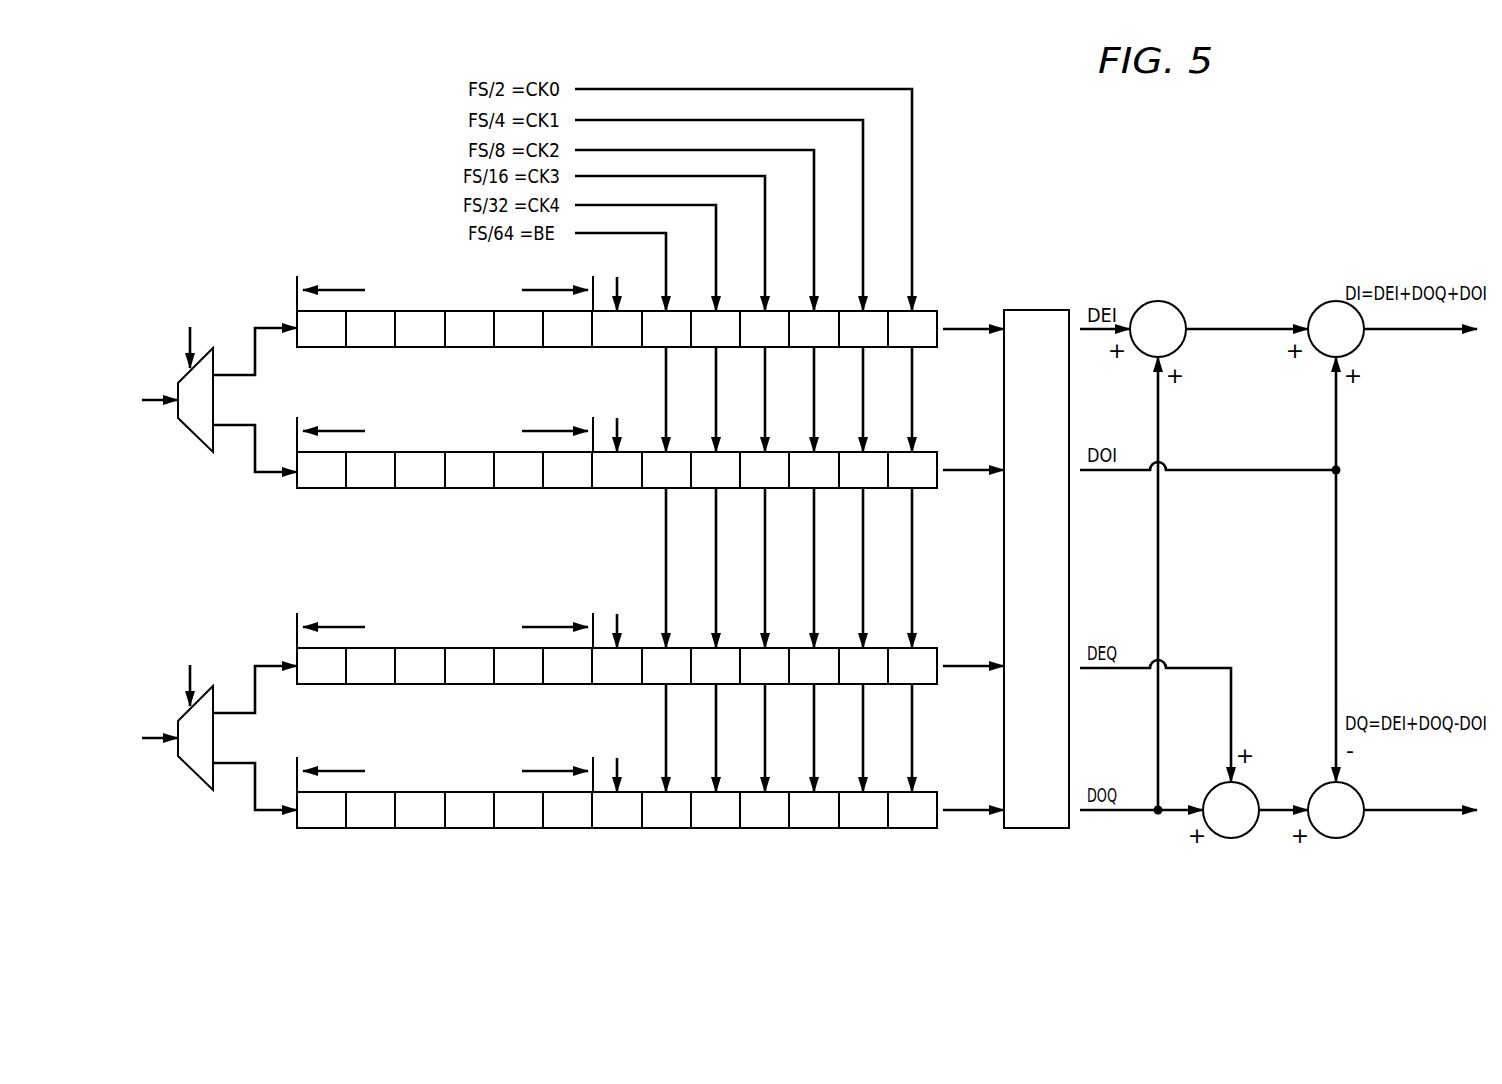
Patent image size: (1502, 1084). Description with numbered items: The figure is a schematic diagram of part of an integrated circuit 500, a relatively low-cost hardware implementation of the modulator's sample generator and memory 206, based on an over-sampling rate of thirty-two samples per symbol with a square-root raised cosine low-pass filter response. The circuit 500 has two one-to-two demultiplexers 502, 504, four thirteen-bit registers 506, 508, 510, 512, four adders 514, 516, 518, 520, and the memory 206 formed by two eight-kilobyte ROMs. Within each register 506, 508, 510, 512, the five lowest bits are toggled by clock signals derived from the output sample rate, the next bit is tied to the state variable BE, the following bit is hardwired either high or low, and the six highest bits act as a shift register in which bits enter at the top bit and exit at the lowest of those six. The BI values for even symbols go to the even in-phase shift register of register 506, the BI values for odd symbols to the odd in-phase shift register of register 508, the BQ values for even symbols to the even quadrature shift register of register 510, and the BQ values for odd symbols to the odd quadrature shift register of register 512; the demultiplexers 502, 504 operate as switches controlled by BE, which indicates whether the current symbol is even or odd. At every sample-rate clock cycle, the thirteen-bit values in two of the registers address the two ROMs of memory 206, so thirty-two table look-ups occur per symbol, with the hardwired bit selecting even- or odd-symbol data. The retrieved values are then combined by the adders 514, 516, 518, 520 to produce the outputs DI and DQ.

The integrated circuit 500 is at (1258, 159).
The memory 206 is at (1036, 310).
The 1:2 demultiplexer 502 is at (192, 434).
The 1:2 demultiplexer 504 is at (192, 772).
The 13-bit register 506 is at (347, 347).
The 13-bit register 508 is at (347, 488).
The 13-bit register 510 is at (347, 684).
The 13-bit register 512 is at (347, 828).
The adder 514 is at (1141, 307).
The adder 516 is at (1320, 307).
The adder 518 is at (1251, 791).
The adder 520 is at (1356, 791).